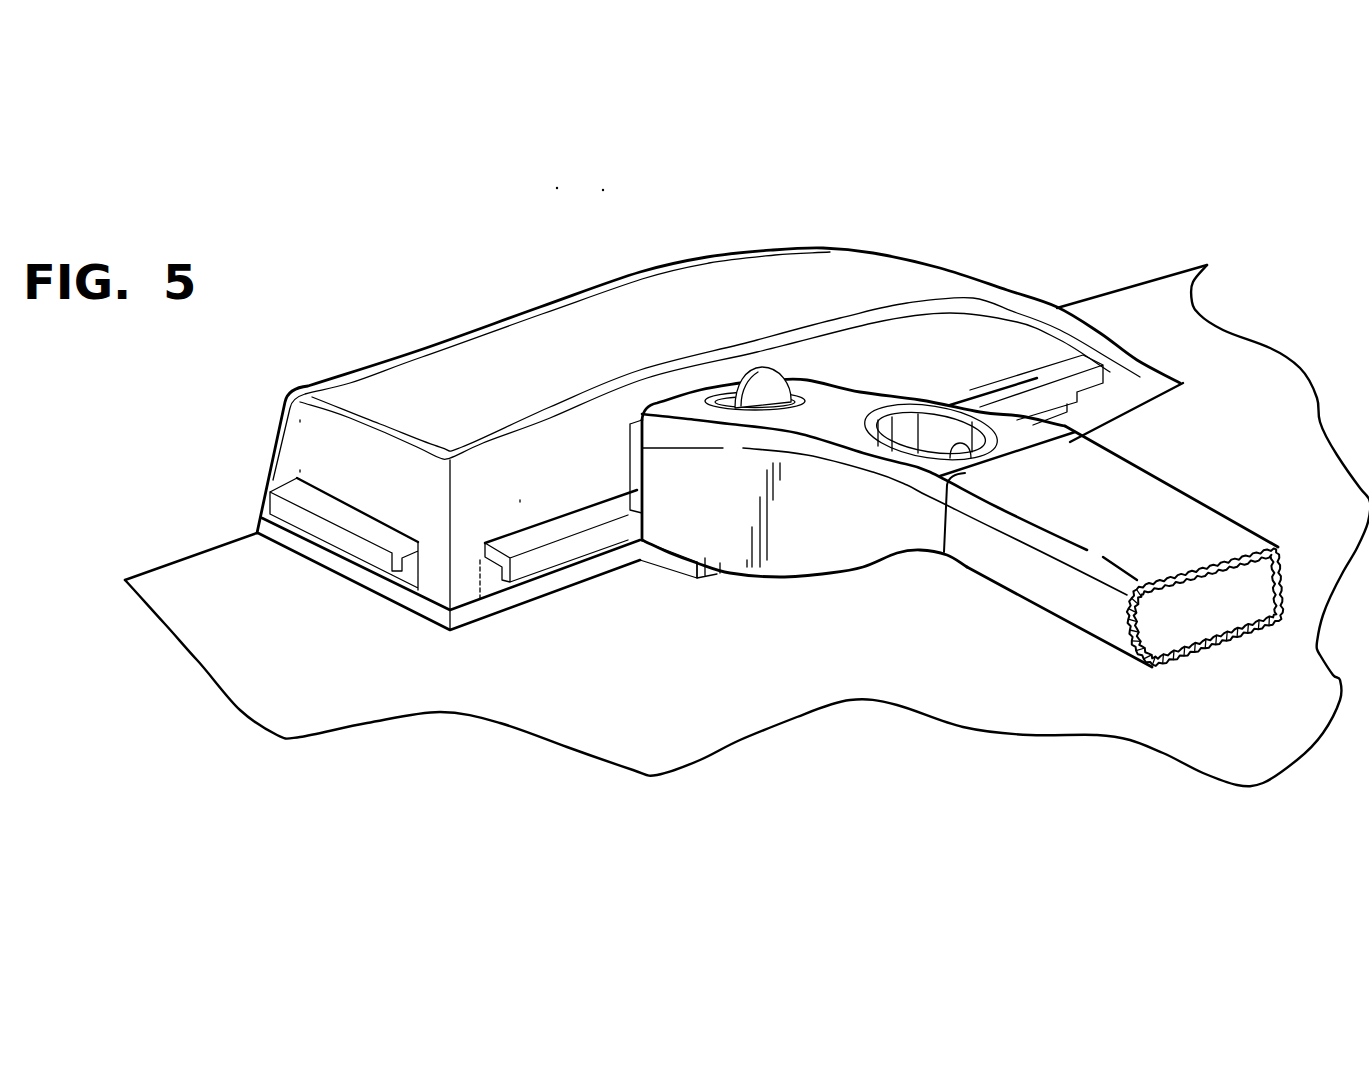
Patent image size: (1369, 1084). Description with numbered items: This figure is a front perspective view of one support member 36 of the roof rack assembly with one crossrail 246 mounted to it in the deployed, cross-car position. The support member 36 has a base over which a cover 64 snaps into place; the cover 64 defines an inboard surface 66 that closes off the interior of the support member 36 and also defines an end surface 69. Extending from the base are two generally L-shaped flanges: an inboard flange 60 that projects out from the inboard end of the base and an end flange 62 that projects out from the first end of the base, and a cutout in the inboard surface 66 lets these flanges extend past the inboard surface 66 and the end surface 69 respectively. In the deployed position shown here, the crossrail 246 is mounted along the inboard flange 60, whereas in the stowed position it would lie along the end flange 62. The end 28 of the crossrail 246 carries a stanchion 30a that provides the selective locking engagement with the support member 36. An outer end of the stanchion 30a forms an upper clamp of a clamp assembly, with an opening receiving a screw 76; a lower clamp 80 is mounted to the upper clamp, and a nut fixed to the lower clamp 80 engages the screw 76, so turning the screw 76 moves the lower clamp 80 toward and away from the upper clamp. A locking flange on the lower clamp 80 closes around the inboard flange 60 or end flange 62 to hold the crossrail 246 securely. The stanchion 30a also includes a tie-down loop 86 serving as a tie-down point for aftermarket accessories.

The support member 36 is at (557, 300).
The cover 64 is at (302, 446).
The end surface 69 is at (364, 488).
The inboard surface 66 is at (578, 484).
The end flange 62 is at (367, 546).
The inboard flange 60 is at (558, 556).
The stanchion 30a is at (872, 570).
The screw 76 is at (765, 383).
The tie-down loop 86 is at (967, 446).
The end 28 is at (1117, 369).
The tube 246 is at (1221, 503).
The lower clamp 80 is at (700, 582).